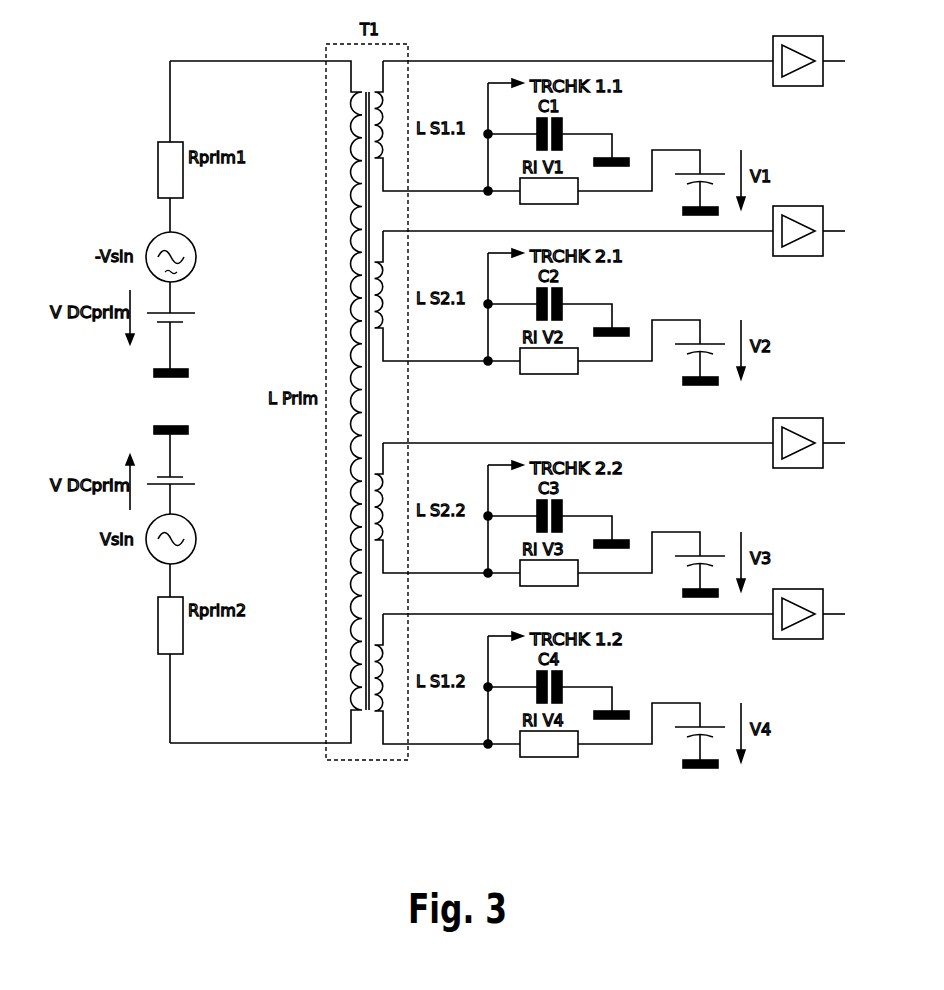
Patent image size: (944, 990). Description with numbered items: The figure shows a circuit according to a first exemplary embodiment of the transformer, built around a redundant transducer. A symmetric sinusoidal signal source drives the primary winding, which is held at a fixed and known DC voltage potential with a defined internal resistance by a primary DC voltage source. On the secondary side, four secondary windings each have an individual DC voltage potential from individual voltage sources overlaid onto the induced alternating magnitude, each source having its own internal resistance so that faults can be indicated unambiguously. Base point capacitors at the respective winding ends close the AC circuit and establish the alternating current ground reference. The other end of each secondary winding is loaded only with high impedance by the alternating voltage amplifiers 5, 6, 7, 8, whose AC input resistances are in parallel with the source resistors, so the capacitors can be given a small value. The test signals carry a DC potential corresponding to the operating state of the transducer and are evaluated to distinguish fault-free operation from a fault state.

The alternating voltage amplifier 5 is at (800, 36).
The alternating voltage amplifier 6 is at (800, 206).
The alternating voltage amplifier 7 is at (800, 418).
The alternating voltage amplifier 8 is at (800, 639).